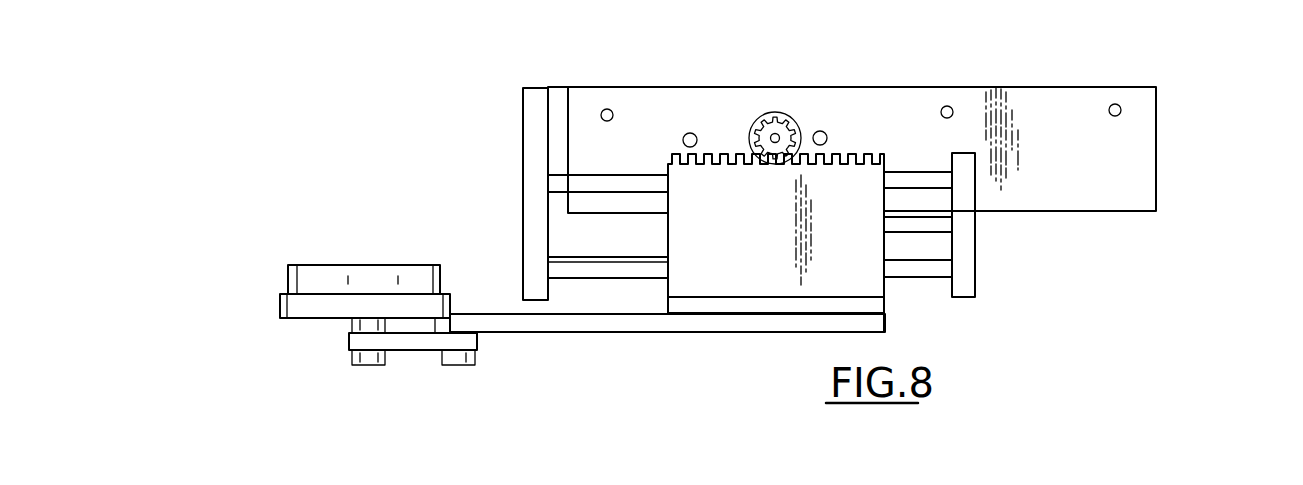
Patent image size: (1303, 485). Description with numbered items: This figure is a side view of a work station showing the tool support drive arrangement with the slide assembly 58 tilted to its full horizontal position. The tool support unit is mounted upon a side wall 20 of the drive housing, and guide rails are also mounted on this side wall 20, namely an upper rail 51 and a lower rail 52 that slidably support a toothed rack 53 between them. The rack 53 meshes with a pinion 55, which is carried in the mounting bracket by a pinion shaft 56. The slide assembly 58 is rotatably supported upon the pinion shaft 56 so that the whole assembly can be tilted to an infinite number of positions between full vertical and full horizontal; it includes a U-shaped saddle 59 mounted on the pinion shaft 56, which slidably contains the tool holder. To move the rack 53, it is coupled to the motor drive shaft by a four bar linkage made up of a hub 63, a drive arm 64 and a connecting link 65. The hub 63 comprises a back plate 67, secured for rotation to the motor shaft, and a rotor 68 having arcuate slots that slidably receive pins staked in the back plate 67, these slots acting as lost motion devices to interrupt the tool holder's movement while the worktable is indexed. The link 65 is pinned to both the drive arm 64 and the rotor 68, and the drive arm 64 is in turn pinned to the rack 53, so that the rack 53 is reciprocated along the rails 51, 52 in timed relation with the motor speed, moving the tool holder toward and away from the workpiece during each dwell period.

The side plate 20 is at (523, 120).
The upper rail 51 is at (592, 173).
The lower rail 52 is at (912, 272).
The rack 53 is at (848, 172).
The pinion 55 is at (789, 120).
The pinion shaft 56 is at (777, 158).
The slide assembly 58 is at (866, 172).
The U-shaped saddle 59 is at (1137, 90).
The hub 63 is at (340, 320).
The drive arm 64 is at (597, 332).
The connecting link 65 is at (417, 352).
The back plate 67 is at (297, 280).
The rotor 68 is at (280, 310).